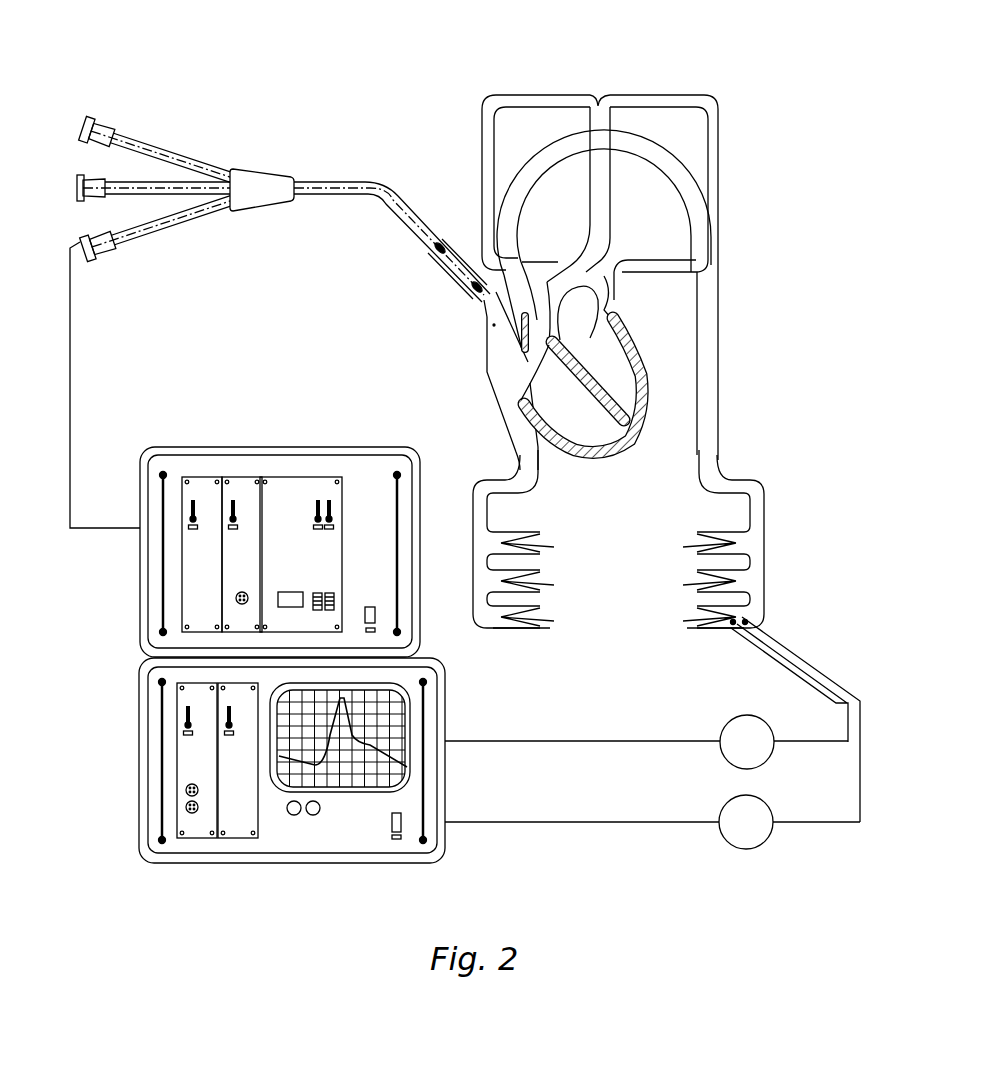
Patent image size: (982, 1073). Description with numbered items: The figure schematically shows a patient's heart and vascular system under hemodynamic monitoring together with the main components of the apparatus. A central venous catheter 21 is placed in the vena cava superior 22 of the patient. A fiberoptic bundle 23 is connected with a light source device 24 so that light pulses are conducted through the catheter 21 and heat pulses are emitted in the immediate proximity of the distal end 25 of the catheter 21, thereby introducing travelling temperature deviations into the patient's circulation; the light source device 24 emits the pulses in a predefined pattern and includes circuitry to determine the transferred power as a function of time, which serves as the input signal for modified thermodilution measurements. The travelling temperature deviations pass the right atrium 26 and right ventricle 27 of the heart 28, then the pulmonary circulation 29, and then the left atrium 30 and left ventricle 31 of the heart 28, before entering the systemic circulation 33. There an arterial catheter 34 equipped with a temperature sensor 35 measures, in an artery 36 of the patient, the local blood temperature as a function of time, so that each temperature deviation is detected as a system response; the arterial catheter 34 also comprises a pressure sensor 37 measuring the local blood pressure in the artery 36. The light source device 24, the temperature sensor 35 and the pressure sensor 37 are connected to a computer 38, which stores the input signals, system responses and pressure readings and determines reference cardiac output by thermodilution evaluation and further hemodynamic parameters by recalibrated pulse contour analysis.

The central venous catheter 21 is at (417, 216).
The vena cava superior 22 is at (452, 273).
The fiberoptic bundle 23 is at (73, 278).
The light source device 24 is at (263, 467).
The distal end 25 is at (487, 301).
The right atrium 26 is at (503, 378).
The right ventricle 27 is at (573, 423).
The heart 28 is at (625, 430).
The pulmonary circulation 29 is at (598, 117).
The left atrium 30 is at (605, 310).
The left ventricle 31 is at (610, 363).
The systemic circulation 33 is at (703, 488).
The arterial catheter 34 is at (758, 649).
The temperature sensor 35 is at (732, 806).
The artery 36 is at (757, 622).
The pressure sensor 37 is at (725, 721).
The computer 38 is at (152, 718).